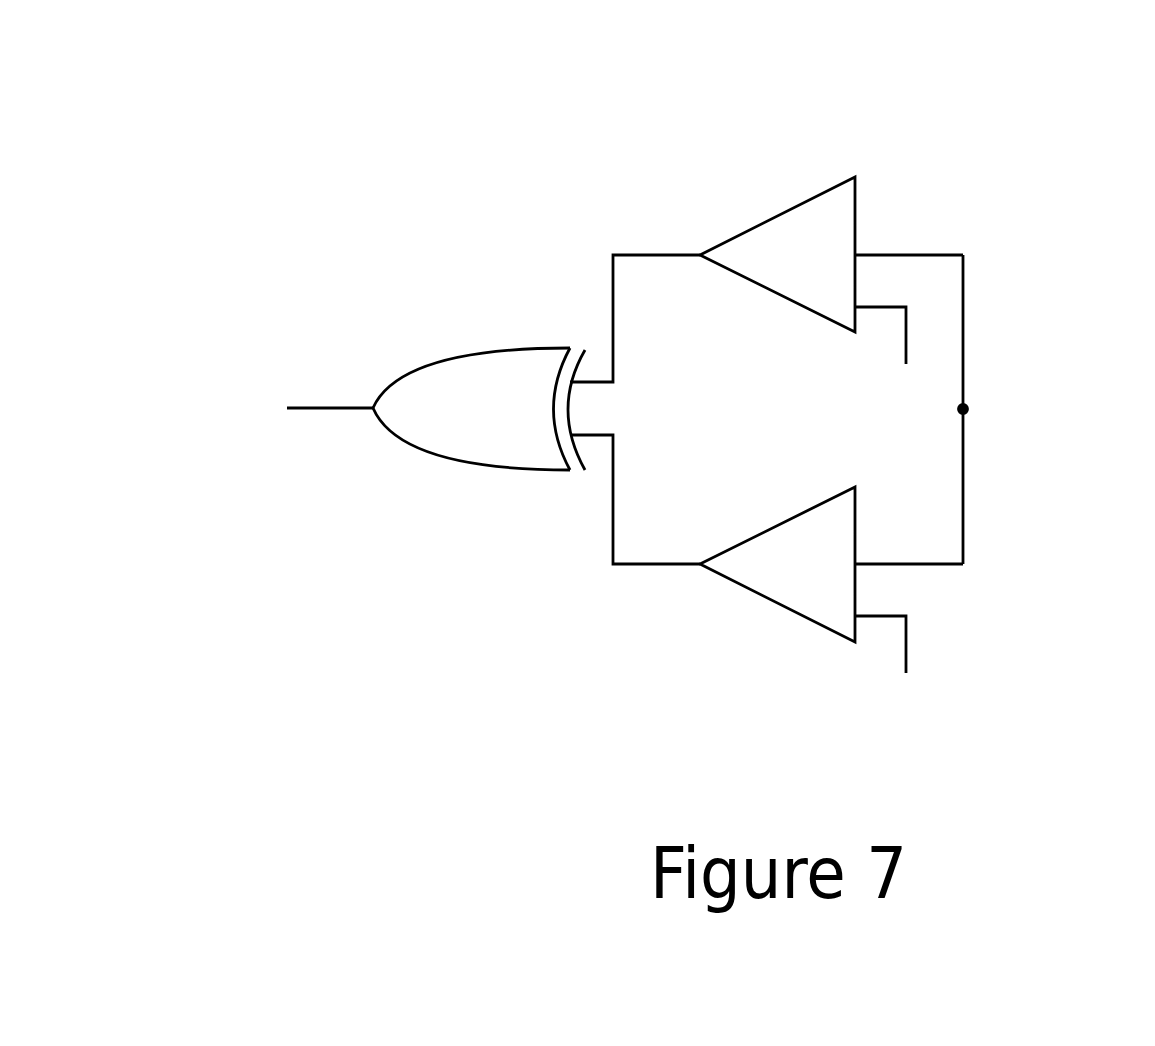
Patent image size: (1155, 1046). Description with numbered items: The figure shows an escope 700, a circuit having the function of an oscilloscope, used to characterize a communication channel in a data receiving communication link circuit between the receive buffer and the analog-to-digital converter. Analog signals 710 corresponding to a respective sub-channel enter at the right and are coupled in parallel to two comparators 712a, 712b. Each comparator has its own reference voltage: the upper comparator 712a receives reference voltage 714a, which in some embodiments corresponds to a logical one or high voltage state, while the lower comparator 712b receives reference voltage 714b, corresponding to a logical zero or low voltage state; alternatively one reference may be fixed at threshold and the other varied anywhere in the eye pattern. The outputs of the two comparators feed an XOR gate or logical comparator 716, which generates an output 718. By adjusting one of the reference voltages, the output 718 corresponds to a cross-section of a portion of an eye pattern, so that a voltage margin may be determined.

The escope 700 is at (806, 93).
The analog signals 710 is at (963, 409).
The comparator 712a is at (838, 272).
The comparator 712b is at (838, 580).
The reference voltage 714a is at (896, 380).
The reference voltage 714b is at (896, 689).
The XOR gate or logical comparator 716 is at (479, 409).
The output 718 is at (296, 410).